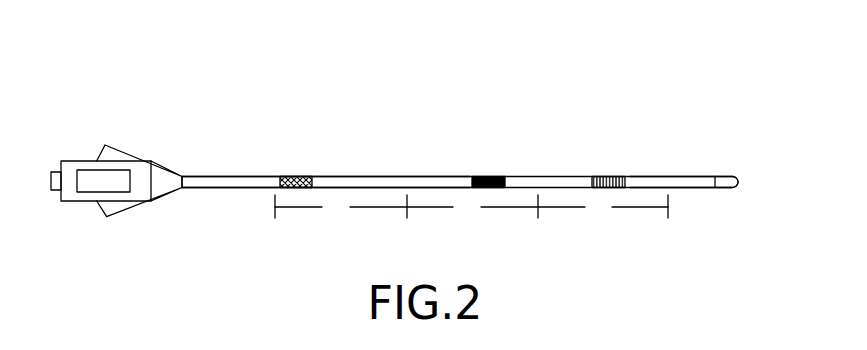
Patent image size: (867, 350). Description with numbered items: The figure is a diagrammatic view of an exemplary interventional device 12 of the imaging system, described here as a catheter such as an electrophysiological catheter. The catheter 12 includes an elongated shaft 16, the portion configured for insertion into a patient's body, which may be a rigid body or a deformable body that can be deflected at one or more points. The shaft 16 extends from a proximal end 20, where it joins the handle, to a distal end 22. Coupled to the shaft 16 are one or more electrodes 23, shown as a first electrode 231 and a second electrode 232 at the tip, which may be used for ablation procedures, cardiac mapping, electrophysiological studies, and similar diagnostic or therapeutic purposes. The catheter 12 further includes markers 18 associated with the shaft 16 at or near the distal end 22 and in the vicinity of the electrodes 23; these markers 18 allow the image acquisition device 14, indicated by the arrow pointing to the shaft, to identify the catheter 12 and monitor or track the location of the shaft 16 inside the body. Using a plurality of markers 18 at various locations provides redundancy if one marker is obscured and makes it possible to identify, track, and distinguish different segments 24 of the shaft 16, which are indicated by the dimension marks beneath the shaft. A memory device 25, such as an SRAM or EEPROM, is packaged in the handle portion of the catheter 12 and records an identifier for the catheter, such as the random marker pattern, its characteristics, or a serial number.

The interventional device 12 is at (158, 145).
The image acquisition device 14 is at (376, 78).
The shaft 16 is at (258, 182).
The marker 18 is at (296, 176).
The proximal end 20 is at (183, 188).
The distal end 22 is at (662, 175).
The electrodes 23 is at (627, 143).
The first electrode 231 is at (488, 175).
The second electrode 232 is at (725, 175).
The segments 24 is at (471, 206).
The memory device 25 is at (85, 176).